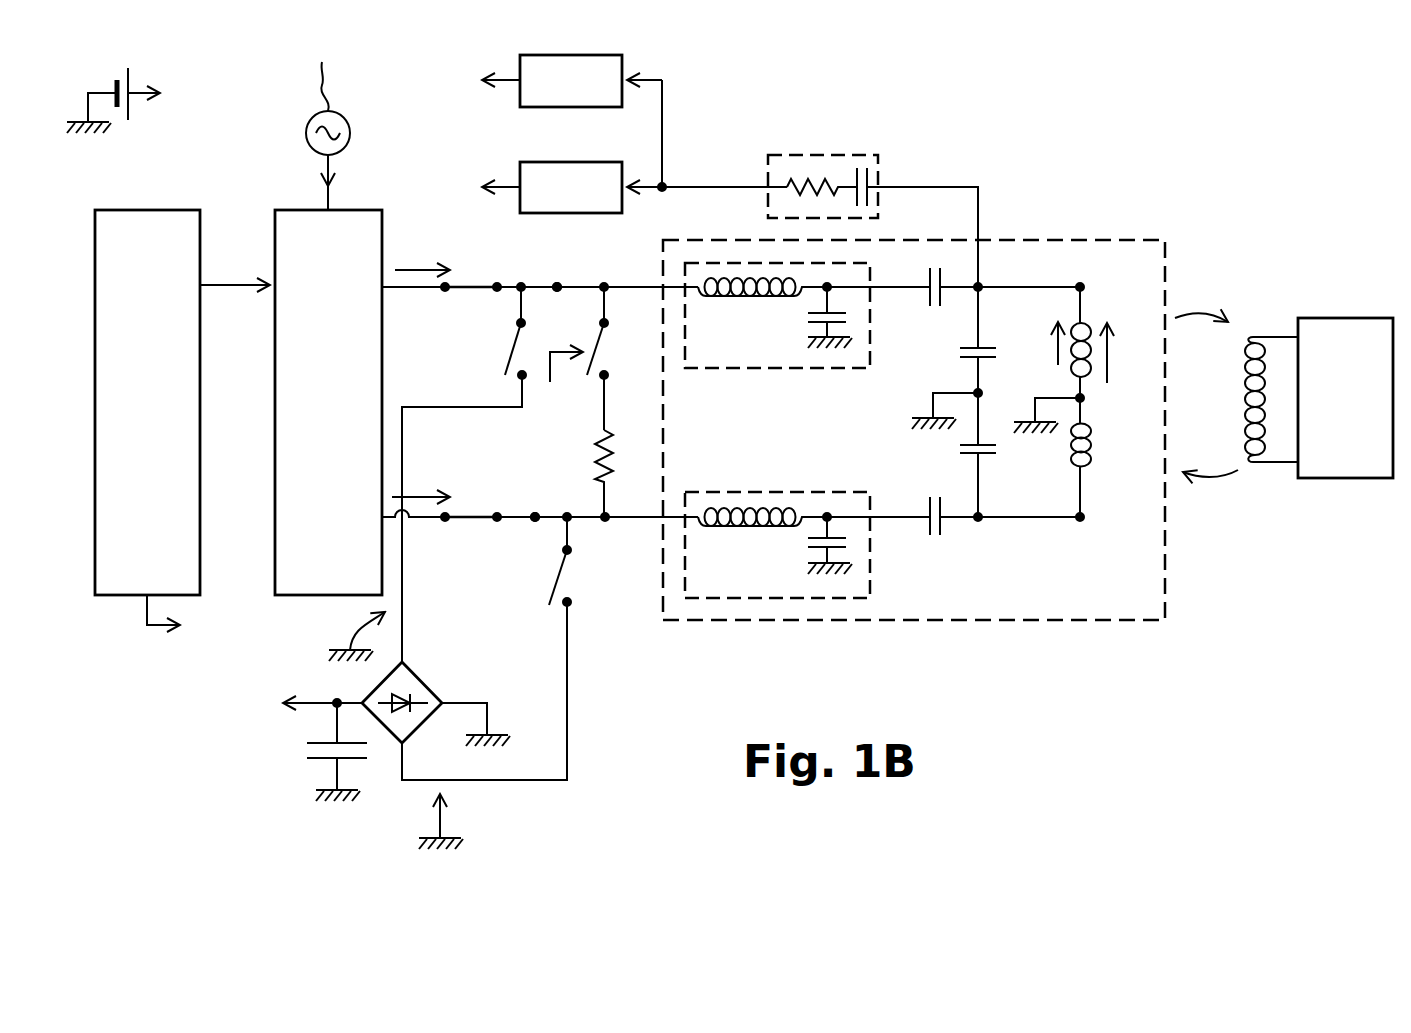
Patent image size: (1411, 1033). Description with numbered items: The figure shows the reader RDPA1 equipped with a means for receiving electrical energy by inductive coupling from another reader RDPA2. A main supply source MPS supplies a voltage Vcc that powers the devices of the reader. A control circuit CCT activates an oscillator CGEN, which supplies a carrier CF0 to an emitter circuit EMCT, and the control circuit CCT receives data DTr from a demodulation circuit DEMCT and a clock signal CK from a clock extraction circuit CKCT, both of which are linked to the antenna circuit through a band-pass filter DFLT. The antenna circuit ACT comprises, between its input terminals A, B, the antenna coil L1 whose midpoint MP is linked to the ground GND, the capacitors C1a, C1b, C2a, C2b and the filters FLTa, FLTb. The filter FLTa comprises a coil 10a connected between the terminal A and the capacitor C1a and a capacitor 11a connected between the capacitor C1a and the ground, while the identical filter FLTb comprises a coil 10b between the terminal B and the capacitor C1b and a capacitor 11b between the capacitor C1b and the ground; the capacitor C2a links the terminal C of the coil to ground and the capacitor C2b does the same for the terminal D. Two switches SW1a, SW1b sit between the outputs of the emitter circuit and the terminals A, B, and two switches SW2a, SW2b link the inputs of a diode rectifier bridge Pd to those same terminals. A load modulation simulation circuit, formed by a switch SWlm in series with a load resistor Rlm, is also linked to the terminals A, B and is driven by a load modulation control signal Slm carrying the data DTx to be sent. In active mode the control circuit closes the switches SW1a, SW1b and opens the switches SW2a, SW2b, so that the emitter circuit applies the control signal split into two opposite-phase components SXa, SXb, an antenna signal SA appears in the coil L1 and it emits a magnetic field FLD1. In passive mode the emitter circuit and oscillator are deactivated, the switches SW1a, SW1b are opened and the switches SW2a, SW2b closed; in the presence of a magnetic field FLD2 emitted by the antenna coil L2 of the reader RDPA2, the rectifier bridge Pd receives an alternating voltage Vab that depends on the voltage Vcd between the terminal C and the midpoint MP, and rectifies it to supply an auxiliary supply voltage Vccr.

The main supply source MPS is at (133, 76).
The supply voltage Vcc is at (168, 94).
The oscillator CGEN is at (318, 96).
The carrier signal CF0 is at (353, 182).
The control circuit CCT is at (147, 402).
The emitter circuit EMCT is at (328, 402).
The data to be sent DTx is at (235, 270).
The load modulation control signal Slm is at (365, 495).
The clock extraction circuit CKCT is at (571, 81).
The demodulation circuit DEMCT is at (571, 187).
The clock signal CK is at (477, 82).
The received data DTr is at (476, 188).
The band-pass filter DFLT is at (838, 152).
The reader RDPA1 is at (1088, 176).
The antenna circuit ACT is at (1055, 622).
The control signal component SXa is at (422, 252).
The control signal component SXb is at (422, 481).
The switch SW1a is at (475, 286).
The switch SW2a is at (505, 340).
The load modulation switch SWlm is at (600, 352).
The load resistor Rlm is at (613, 468).
The switch SW1b is at (475, 521).
The switch SW2b is at (558, 573).
The input terminal A is at (557, 284).
The input terminal B is at (535, 521).
The antenna coil terminal C is at (1079, 272).
The antenna coil terminal D is at (1080, 529).
The diode rectifier bridge Pd is at (413, 687).
The auxiliary supply voltage Vccr is at (278, 705).
The alternating voltage Vab is at (402, 730).
The low-pass filter FLTa is at (800, 370).
The low-pass filter FLTb is at (828, 600).
The coil 10a is at (712, 297).
The capacitor 11a is at (810, 312).
The coil 10b is at (745, 528).
The capacitor 11b is at (843, 548).
The capacitor C1a is at (927, 297).
The capacitor C2a is at (962, 372).
The capacitor C2b is at (962, 460).
The capacitor C1b is at (944, 520).
The ground GND is at (1024, 420).
The antenna coil L1 is at (1088, 320).
The midpoint MP is at (1086, 398).
The antenna signal SA is at (1038, 343).
The antenna signal voltage Vcd is at (1129, 353).
The antenna coil L2 is at (1240, 418).
The reader RDPA2 is at (1345, 398).
The magnetic field FLD1 is at (1202, 304).
The magnetic field FLD2 is at (1210, 491).